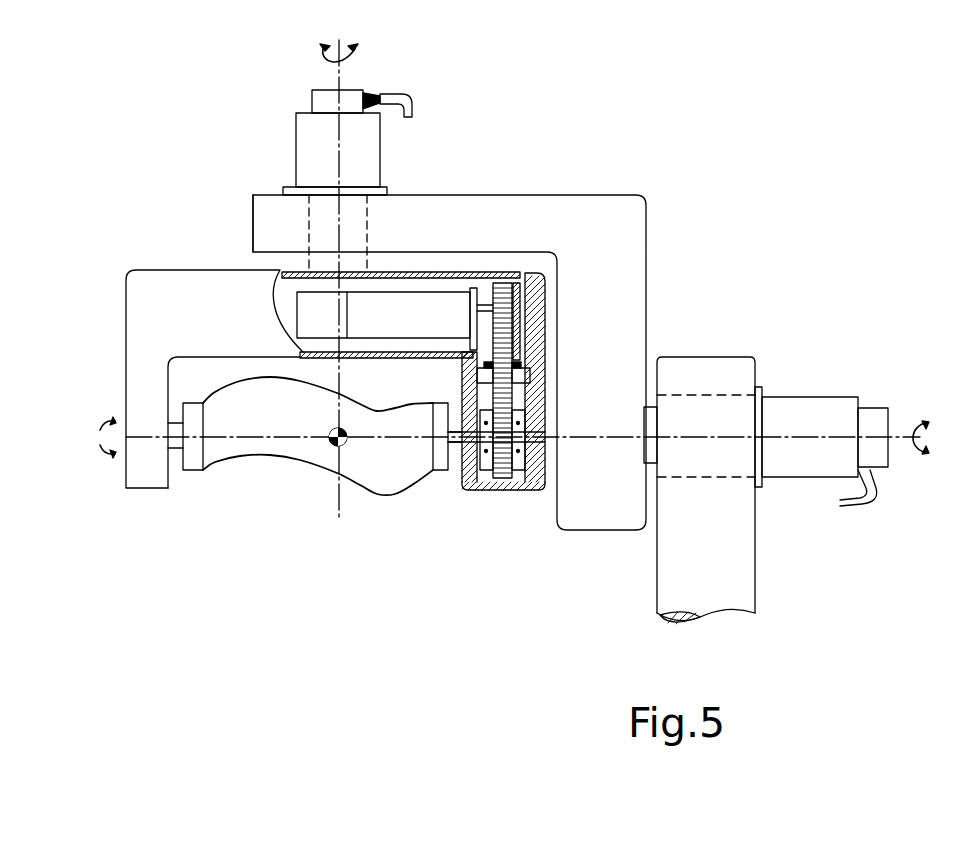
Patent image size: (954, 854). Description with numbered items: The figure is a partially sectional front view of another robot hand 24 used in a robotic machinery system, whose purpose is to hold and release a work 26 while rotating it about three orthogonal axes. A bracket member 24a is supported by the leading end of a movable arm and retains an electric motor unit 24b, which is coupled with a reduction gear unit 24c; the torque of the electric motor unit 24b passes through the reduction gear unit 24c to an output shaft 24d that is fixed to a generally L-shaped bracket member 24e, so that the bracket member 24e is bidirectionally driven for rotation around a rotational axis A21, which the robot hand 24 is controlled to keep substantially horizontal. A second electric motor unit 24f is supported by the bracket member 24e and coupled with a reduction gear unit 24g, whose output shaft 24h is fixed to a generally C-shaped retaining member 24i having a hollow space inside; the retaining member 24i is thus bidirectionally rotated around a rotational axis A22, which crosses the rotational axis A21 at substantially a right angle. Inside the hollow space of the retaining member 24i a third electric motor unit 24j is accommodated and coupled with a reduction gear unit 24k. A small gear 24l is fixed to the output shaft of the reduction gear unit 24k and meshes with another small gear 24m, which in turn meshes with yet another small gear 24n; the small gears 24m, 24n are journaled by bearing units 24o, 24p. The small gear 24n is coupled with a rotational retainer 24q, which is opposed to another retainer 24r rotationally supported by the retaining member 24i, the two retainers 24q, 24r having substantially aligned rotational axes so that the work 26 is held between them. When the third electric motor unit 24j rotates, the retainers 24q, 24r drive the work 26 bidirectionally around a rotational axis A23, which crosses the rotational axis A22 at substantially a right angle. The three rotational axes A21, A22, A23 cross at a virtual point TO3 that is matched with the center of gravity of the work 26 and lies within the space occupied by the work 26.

The robot hand 24 is at (790, 88).
The bracket member 24a is at (744, 581).
The electric motor unit 24b is at (808, 410).
The reduction gear unit 24c is at (716, 405).
The output shaft 24d is at (648, 405).
The bracket member 24e is at (570, 195).
The second electric motor unit 24f is at (373, 142).
The reduction gear unit 24g is at (308, 232).
The output shaft 24h is at (300, 266).
The retaining member 24i is at (133, 330).
The third electric motor unit 24j is at (303, 323).
The reduction gear unit 24k is at (423, 312).
The small gear 24l is at (506, 283).
The small gear 24m is at (552, 343).
The small gear 24n is at (500, 480).
The bearing unit 24o is at (527, 378).
The bearing unit 24p is at (450, 472).
The rotational retainer 24q is at (452, 458).
The retainer 24r is at (178, 450).
The work 26 is at (268, 453).
The rotational axis A21 is at (900, 430).
The rotational axis A22 is at (340, 75).
The rotational axis A23 is at (233, 438).
The virtual point TO3 is at (334, 445).